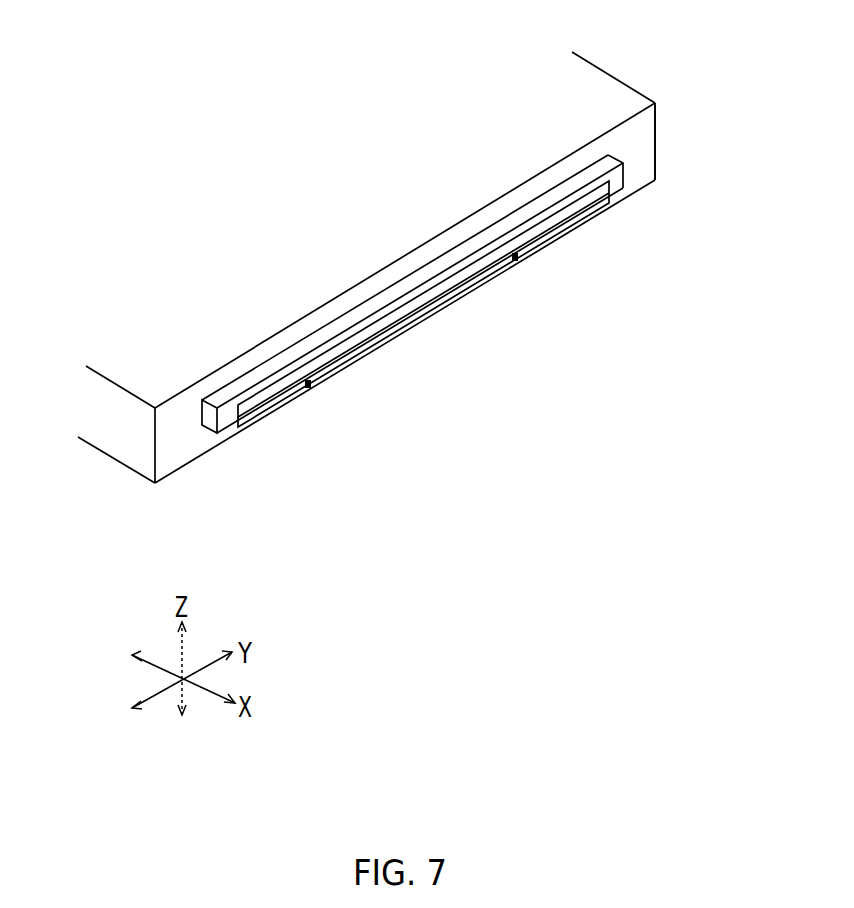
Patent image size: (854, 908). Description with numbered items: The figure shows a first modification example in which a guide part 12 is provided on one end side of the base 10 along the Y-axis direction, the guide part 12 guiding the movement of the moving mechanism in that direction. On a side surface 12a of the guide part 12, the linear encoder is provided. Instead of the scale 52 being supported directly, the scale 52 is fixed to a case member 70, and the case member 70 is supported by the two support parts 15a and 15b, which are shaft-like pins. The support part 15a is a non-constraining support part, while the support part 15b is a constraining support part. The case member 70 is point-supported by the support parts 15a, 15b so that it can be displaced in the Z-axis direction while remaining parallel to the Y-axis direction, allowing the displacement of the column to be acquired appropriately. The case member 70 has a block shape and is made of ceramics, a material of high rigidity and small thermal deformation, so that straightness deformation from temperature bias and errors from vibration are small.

The base 10 is at (108, 490).
The guide part 12 is at (618, 82).
The side surface 12a is at (642, 165).
The case member 70 is at (358, 308).
The scale 52 is at (422, 305).
The support part 15a is at (311, 390).
The support part 15b is at (518, 262).